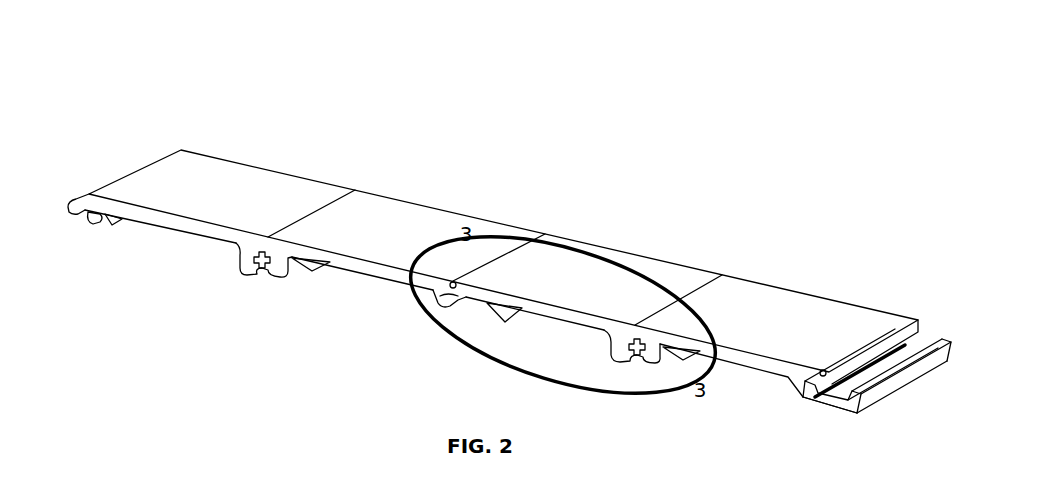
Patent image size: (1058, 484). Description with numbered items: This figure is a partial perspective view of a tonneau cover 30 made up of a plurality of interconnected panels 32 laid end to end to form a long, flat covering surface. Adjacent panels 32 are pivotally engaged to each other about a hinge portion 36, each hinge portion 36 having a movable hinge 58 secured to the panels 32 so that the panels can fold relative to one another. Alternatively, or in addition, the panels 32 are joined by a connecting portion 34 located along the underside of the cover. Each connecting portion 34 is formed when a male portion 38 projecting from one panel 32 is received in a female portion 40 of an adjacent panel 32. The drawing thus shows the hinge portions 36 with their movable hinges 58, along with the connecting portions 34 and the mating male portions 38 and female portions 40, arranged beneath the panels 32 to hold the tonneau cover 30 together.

The tonneau cover 30 is at (212, 96).
The panel 32 is at (241, 177).
The connecting portion 34 is at (70, 192).
The hinge portion 36 is at (255, 296).
The male portion 38 is at (82, 217).
The female portion 40 is at (452, 318).
The movable hinge 58 is at (277, 278).